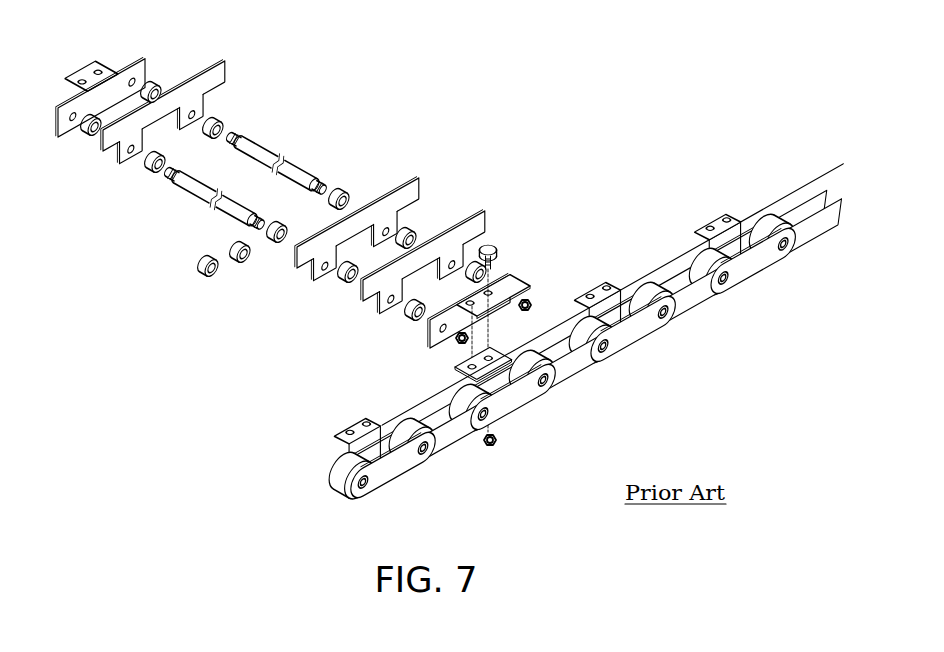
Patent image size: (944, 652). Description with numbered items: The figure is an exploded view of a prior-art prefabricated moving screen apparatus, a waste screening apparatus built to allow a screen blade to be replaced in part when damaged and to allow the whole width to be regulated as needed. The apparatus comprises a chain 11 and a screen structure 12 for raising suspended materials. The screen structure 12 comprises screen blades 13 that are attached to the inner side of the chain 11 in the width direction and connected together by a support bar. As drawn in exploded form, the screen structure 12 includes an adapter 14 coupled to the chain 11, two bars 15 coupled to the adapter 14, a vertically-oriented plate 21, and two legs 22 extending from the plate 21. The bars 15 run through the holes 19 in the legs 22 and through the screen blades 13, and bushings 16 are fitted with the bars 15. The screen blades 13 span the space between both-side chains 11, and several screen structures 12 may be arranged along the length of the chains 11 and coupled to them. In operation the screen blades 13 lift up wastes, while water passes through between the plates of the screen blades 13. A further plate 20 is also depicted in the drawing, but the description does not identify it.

The chain 11 is at (568, 370).
The screen structure 12 is at (283, 190).
The screen blade 13 is at (409, 254).
The adapter 14 is at (67, 132).
The bar 15 is at (210, 183).
The bushing 16 is at (272, 242).
The hole 19 is at (381, 305).
The mounting plate 20 is at (456, 368).
The vertically-oriented plate 21 is at (357, 233).
The leg 22 is at (377, 241).